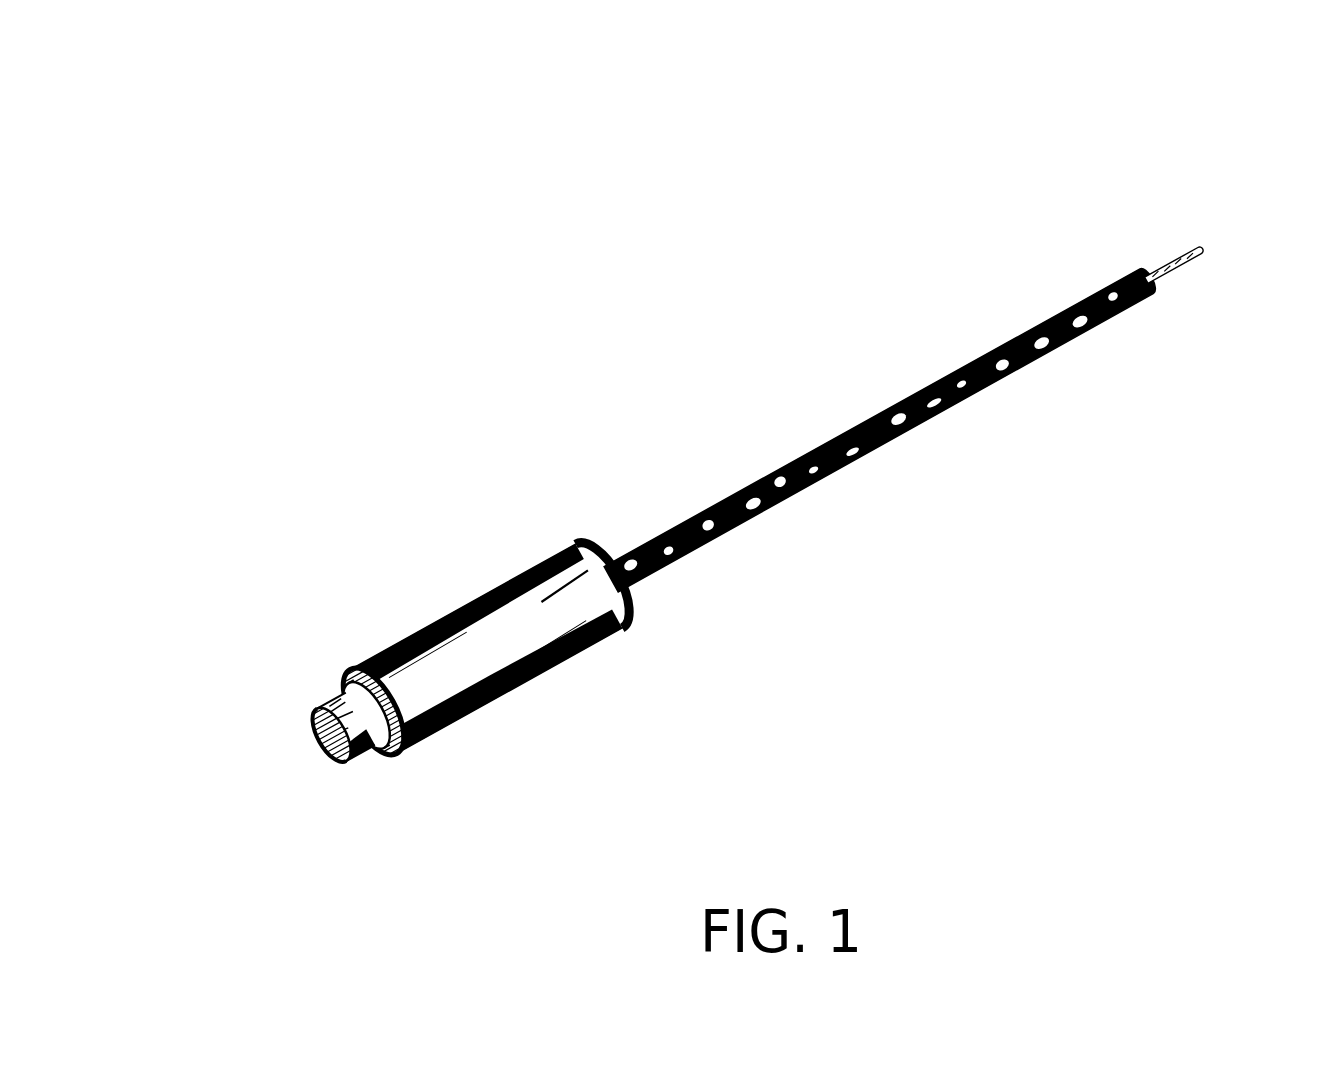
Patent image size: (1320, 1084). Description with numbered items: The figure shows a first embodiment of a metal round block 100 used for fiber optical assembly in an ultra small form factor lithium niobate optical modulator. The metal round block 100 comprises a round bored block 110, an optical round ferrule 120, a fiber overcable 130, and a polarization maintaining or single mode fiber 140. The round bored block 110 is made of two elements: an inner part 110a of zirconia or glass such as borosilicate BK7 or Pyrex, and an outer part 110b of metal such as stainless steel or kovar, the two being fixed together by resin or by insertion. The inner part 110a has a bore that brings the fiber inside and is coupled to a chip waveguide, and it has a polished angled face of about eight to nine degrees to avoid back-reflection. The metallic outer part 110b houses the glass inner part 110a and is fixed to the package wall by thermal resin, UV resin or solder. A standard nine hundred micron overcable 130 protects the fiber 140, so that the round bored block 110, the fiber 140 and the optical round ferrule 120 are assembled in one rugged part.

The metal round block 100 is at (199, 866).
The round bored block 110 is at (509, 567).
The inner part 110a is at (378, 745).
The outer part 110b is at (393, 750).
The optical round ferrule 120 is at (348, 679).
The fiber overcable 130 is at (728, 470).
The polarization maintaining (PM) or single mode (SM) fiber 140 is at (1176, 239).